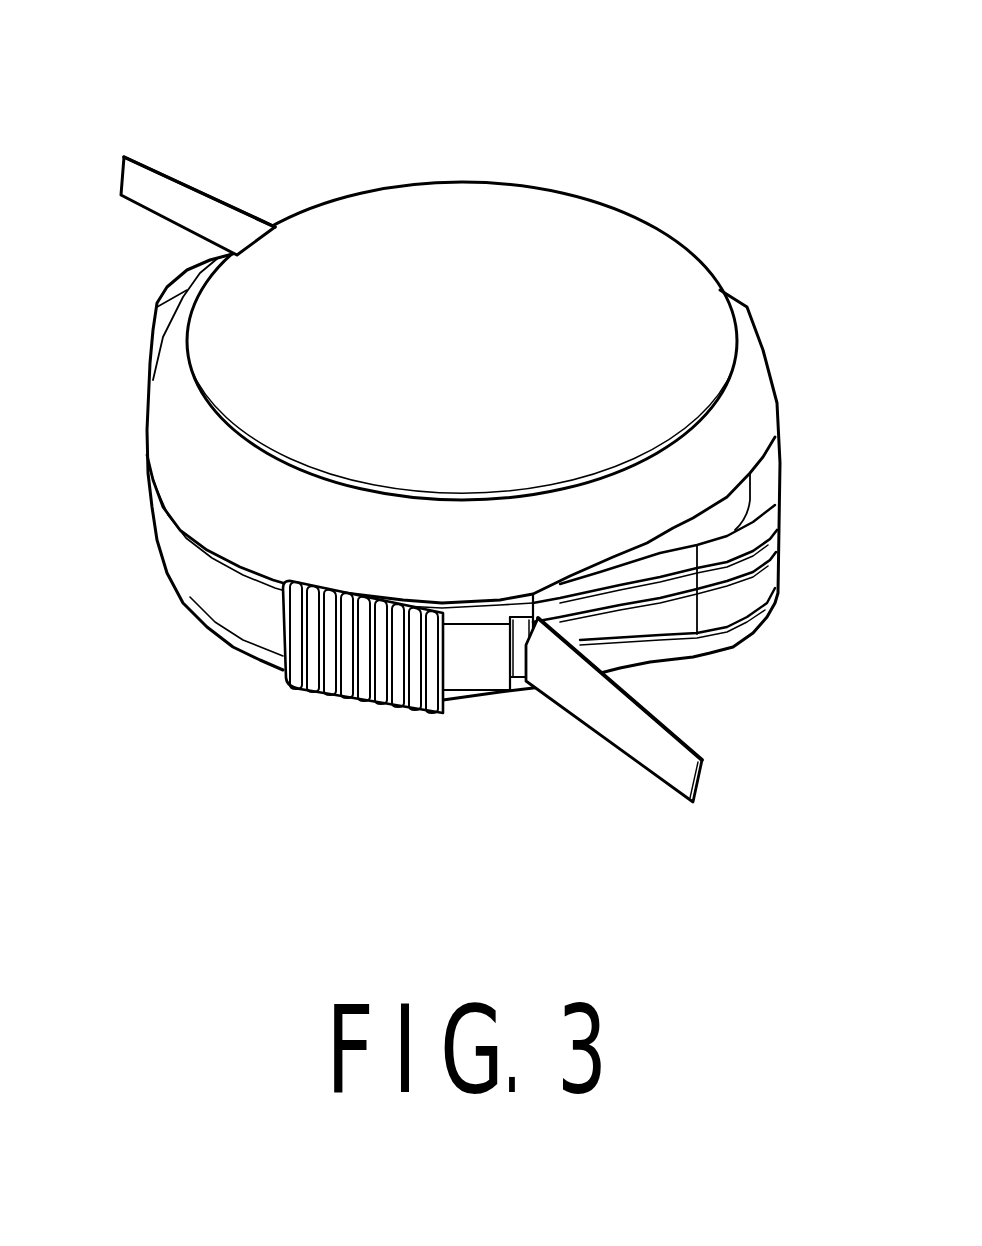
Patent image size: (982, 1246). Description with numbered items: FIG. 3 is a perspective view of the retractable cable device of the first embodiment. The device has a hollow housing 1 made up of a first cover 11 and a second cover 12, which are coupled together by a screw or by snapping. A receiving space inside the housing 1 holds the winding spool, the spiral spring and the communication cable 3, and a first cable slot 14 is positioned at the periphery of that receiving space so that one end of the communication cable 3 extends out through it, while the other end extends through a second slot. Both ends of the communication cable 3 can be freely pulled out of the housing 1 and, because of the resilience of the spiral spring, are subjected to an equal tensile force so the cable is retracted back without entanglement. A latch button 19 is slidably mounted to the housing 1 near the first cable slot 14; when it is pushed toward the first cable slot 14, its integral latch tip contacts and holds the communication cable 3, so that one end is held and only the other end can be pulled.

The housing 1 is at (331, 172).
The communication cable 3 is at (627, 722).
The first cover 11 is at (477, 673).
The second cover 12 is at (653, 325).
The first cable slot 14 is at (553, 625).
The latch button 19 is at (350, 630).